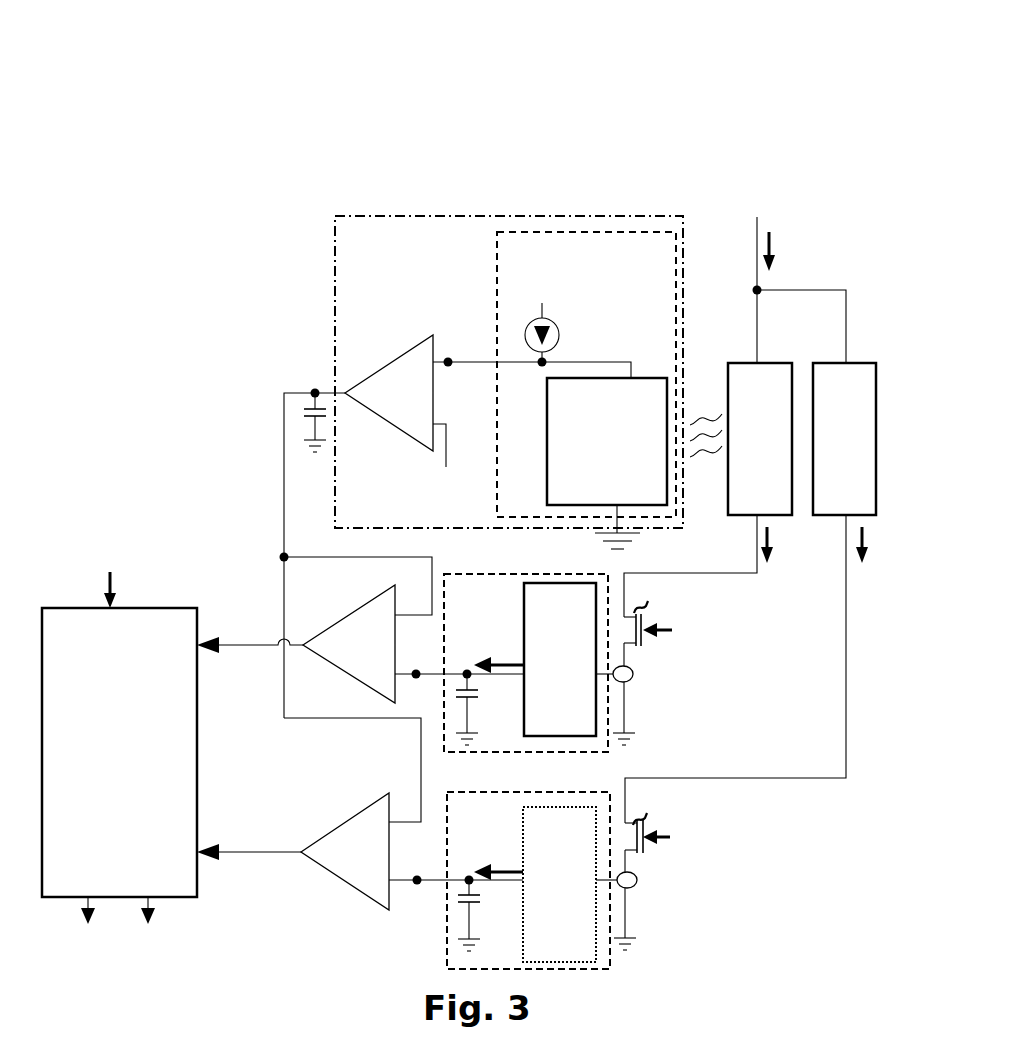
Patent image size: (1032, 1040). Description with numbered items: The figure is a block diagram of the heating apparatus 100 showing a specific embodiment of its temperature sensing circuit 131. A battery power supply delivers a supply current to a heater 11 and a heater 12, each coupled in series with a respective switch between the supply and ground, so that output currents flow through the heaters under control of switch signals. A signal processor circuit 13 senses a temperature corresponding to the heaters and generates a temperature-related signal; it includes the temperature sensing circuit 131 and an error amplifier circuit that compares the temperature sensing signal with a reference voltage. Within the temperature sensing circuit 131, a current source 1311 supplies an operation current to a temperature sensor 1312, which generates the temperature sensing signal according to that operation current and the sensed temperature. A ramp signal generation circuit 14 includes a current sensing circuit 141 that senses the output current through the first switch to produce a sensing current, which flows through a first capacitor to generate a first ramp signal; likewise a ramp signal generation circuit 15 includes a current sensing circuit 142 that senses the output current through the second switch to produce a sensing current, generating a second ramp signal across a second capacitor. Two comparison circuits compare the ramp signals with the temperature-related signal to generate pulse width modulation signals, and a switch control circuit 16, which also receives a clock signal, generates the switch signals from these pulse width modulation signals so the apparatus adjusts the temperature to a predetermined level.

The heating apparatus 100 is at (733, 65).
The signal processor circuit 13 is at (361, 249).
The temperature sensing circuit 131 is at (541, 507).
The current source 1311 is at (557, 327).
The temperature sensor 1312 is at (585, 480).
The heater 11 is at (749, 477).
The heater 12 is at (834, 475).
The ramp signal generation circuit 14 is at (471, 607).
The current sensing circuit 141 is at (544, 709).
The ramp signal generation circuit 15 is at (473, 819).
The current sensing circuit 142 is at (544, 932).
The switch control circuit 16 is at (107, 811).